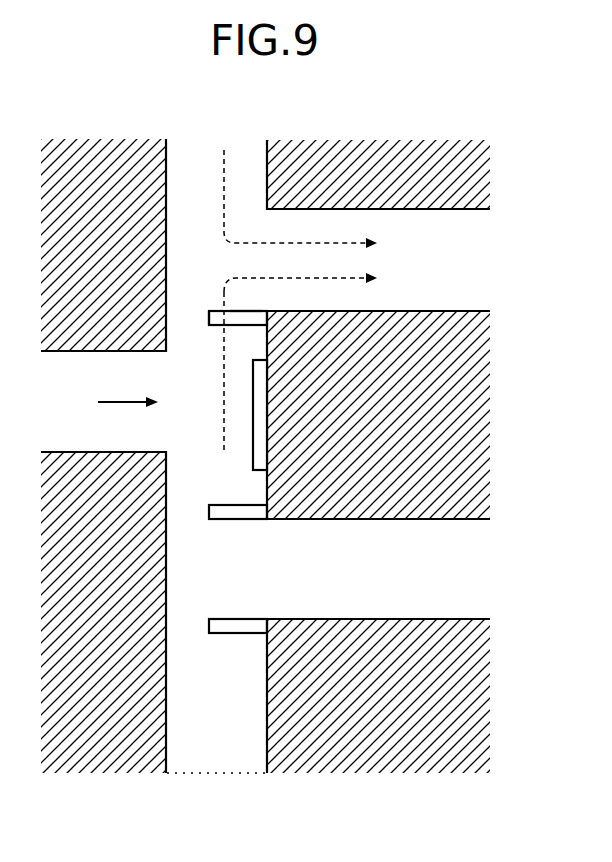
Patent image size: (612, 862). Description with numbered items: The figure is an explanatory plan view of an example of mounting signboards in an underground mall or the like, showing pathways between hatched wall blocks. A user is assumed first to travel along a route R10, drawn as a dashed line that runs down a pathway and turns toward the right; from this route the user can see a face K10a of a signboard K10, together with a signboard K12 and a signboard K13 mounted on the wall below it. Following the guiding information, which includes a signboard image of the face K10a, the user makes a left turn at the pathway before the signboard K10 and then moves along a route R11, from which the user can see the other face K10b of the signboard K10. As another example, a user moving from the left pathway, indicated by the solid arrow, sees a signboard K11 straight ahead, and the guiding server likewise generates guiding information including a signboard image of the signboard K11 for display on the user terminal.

The route R10 is at (288, 209).
The route R11 is at (217, 385).
The signboard K10 is at (243, 318).
The face of signboard K10a is at (242, 310).
The face of signboard K10b is at (210, 328).
The signboard K11 is at (260, 413).
The signboard K12 is at (240, 512).
The signboard K13 is at (245, 627).